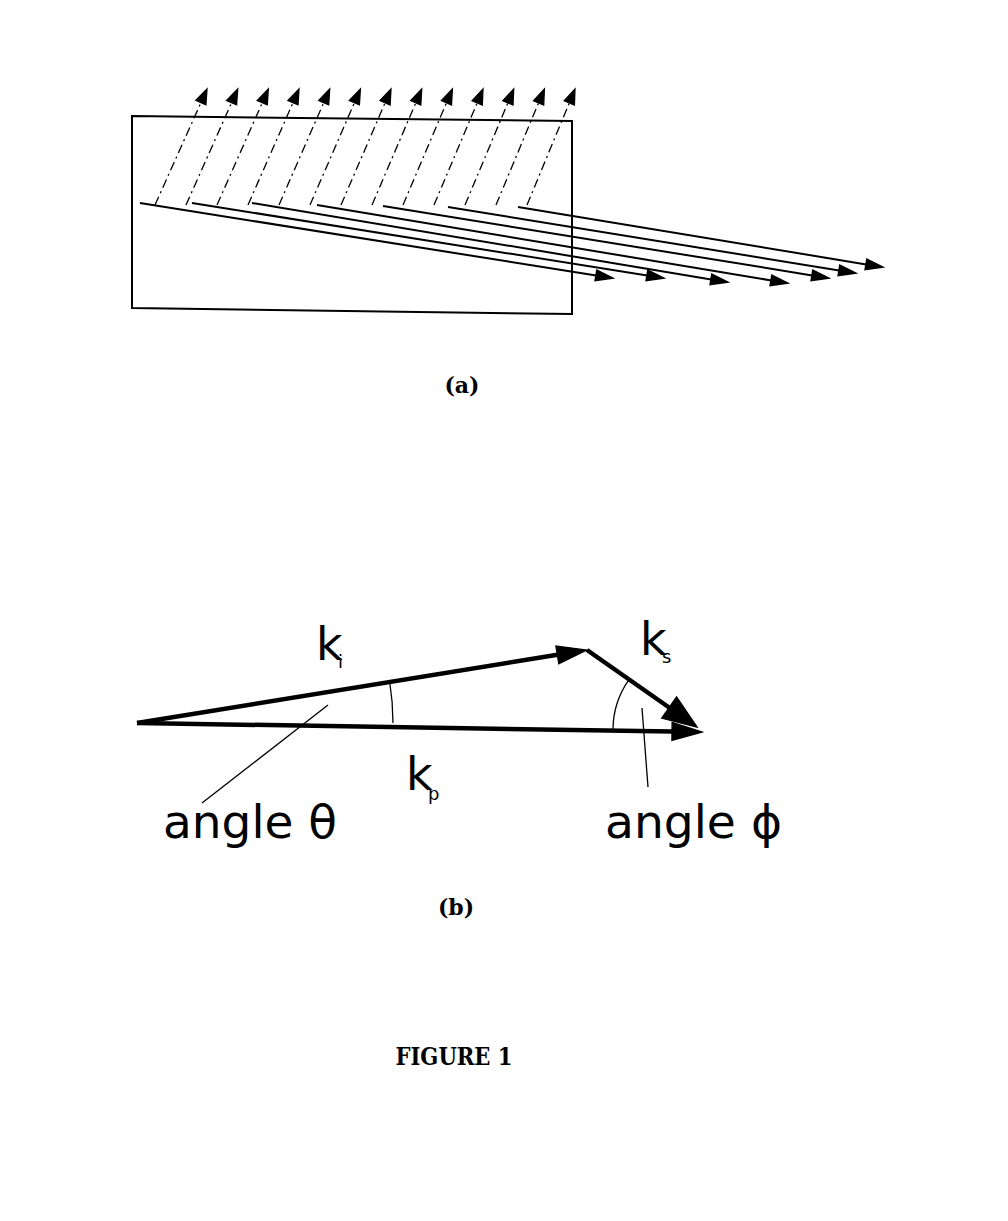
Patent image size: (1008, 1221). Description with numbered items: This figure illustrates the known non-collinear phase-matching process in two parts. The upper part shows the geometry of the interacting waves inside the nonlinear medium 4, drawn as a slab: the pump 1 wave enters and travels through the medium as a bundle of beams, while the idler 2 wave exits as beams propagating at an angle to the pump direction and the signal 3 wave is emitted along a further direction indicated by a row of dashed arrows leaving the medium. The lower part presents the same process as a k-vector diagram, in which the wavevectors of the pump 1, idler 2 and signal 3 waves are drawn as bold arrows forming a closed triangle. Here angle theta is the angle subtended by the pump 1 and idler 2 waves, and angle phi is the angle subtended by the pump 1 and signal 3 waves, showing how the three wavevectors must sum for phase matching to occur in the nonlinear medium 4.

The pump wave 1 is at (648, 210).
The idler wave 2 is at (625, 255).
The signal wave 3 is at (395, 145).
The nonlinear medium 4 is at (173, 277).